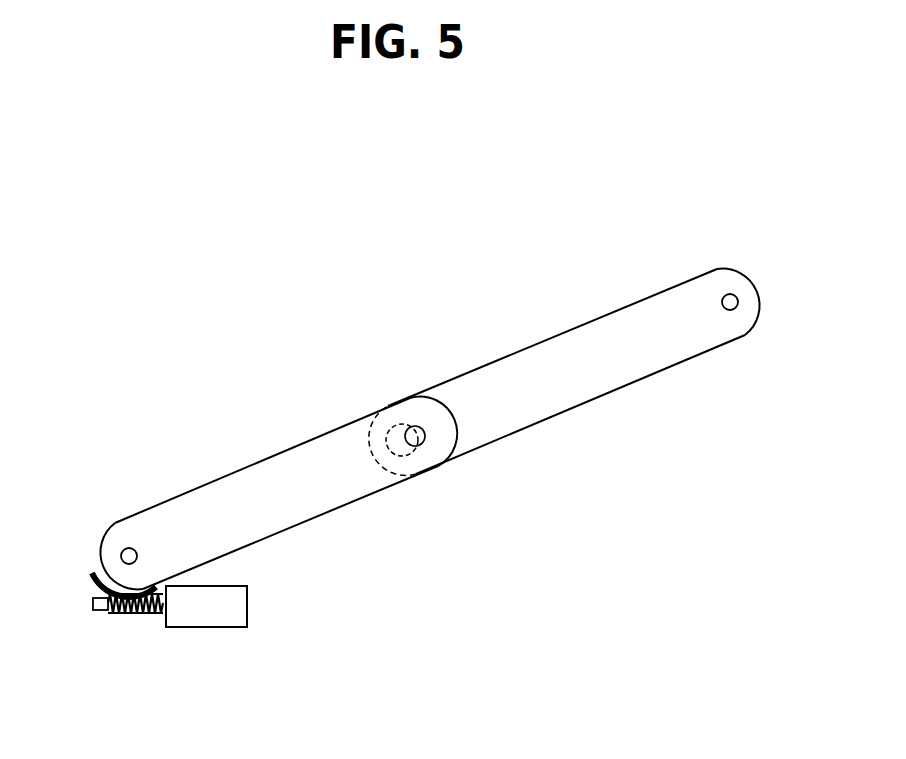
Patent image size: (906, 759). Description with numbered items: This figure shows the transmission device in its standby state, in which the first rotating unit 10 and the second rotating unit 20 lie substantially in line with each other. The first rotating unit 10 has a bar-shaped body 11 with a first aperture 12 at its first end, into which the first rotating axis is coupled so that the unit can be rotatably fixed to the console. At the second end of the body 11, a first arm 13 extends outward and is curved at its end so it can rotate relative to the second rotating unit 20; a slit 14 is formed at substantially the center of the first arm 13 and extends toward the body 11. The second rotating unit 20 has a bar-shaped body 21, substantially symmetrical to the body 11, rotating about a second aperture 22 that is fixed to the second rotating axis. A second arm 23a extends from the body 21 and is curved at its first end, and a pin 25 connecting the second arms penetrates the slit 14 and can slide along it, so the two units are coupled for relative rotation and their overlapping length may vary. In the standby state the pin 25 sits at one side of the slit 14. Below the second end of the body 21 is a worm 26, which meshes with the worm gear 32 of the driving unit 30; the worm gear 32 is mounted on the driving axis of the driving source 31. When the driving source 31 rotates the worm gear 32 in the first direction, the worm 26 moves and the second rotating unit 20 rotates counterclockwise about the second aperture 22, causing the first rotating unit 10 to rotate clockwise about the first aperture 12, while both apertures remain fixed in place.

The first rotating unit 10 is at (531, 382).
The body 11 is at (590, 335).
The first aperture 12 is at (728, 300).
The first arm 13 is at (378, 427).
The slit 14 is at (408, 478).
The second rotating unit 20 is at (297, 482).
The body 21 is at (220, 493).
The second aperture 22 is at (132, 548).
The second arm 23a is at (437, 395).
The pin 25 is at (425, 435).
The worm 26 is at (93, 573).
The driving unit 30 is at (170, 656).
The driving source 31 is at (202, 620).
The worm gear 32 is at (128, 635).